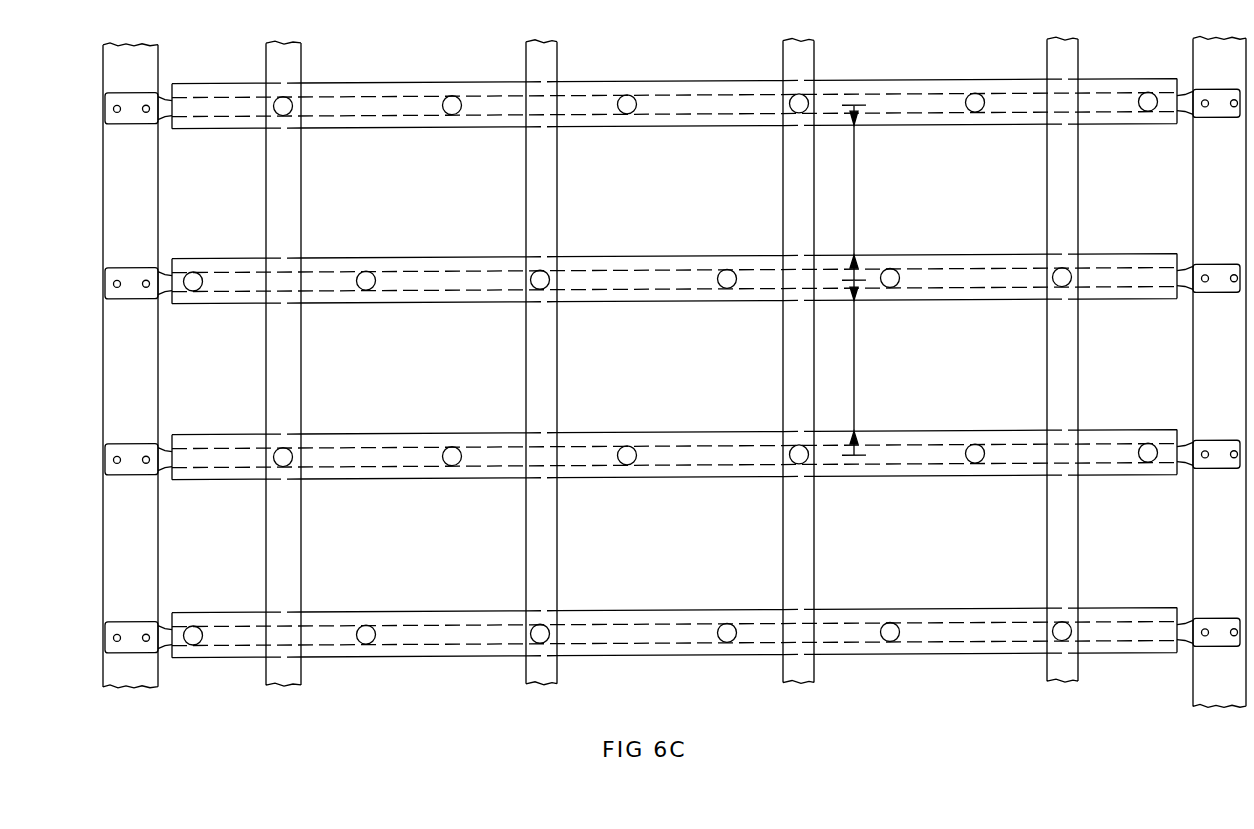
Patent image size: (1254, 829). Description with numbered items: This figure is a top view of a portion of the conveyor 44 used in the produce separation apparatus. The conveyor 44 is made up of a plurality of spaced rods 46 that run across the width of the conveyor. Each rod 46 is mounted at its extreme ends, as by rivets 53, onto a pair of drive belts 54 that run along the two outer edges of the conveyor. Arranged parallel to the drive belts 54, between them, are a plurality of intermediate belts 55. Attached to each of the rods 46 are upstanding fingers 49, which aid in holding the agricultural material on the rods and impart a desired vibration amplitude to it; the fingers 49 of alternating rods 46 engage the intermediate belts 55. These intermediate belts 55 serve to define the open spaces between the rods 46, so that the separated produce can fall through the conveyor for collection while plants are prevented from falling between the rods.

The conveyor 44 is at (674, 374).
The rods 46 is at (228, 119).
The upstanding fingers 49 is at (532, 292).
The rivets 53 is at (117, 461).
The drive belts 54 is at (147, 215).
The intermediate belts 55 is at (292, 396).